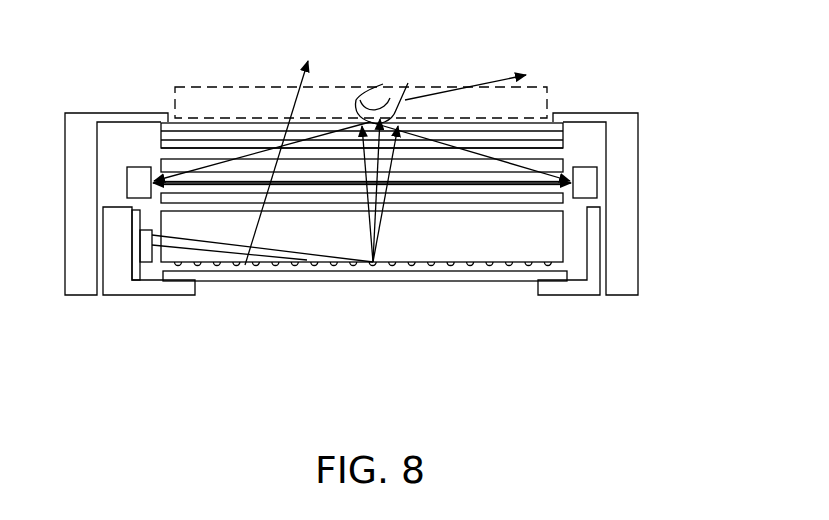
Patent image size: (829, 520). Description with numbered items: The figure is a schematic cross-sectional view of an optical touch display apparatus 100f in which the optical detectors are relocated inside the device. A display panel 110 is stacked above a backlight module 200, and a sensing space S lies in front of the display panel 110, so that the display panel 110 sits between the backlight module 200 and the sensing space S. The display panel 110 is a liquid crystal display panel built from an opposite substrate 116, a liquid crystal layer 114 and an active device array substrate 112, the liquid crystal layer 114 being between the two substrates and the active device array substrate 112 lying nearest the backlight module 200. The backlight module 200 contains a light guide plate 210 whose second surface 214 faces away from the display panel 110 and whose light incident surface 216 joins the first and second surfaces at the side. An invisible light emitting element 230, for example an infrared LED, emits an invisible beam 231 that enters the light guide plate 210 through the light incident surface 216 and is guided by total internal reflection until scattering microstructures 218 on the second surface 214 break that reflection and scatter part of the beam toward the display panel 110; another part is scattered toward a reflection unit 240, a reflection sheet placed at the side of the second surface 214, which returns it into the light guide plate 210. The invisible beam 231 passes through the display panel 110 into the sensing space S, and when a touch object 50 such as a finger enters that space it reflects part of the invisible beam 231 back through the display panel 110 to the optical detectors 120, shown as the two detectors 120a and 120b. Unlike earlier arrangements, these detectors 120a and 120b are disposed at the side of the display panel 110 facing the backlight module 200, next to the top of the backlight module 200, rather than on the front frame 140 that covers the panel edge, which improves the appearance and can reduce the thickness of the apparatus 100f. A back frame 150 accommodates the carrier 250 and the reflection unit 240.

The optical touch display apparatus 100f is at (725, 389).
The front frame 140 is at (80, 112).
The back frame 150 is at (178, 283).
The sensing space S is at (250, 87).
The display panel 110 is at (450, 127).
The opposite substrate 116 is at (563, 128).
The liquid crystal layer 114 is at (563, 138).
The active device array substrate 112 is at (565, 144).
The optical detector 120 is at (424, 111).
The optical detector 120a is at (587, 184).
The optical detector 120b is at (139, 178).
The touch object 50 is at (383, 83).
The backlight module 200 is at (568, 238).
The light guide plate 210 is at (460, 242).
The second surface 214 is at (503, 267).
The scattering microstructures 218 is at (373, 264).
The light incident surface 216 is at (152, 268).
The invisible beam 231 is at (205, 255).
The reflection unit 240 is at (265, 282).
The carrier 250 is at (133, 258).
The invisible light emitting element 230 is at (143, 255).